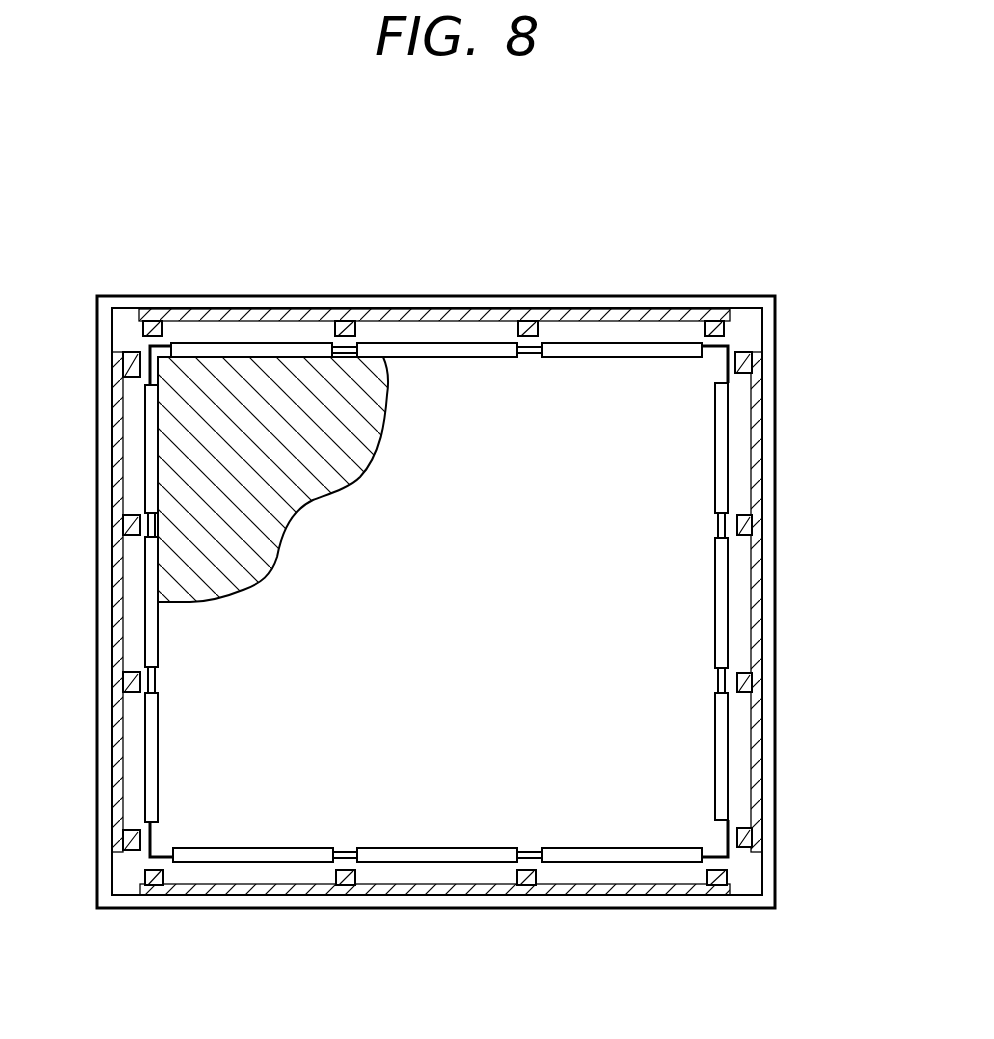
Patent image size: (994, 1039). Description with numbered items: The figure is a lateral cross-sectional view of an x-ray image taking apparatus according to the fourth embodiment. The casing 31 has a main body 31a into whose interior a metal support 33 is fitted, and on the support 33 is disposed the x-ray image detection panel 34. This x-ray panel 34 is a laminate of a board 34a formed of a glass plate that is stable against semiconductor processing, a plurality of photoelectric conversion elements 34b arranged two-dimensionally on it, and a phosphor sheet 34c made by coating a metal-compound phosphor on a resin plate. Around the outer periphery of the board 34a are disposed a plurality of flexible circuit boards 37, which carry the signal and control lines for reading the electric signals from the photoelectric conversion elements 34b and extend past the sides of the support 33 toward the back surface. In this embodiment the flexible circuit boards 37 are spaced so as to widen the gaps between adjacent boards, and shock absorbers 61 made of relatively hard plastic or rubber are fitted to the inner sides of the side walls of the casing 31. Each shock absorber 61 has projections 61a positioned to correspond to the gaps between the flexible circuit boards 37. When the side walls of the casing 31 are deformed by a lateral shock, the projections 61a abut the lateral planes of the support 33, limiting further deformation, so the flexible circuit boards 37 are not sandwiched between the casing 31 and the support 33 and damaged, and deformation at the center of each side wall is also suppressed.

The casing 31 is at (519, 298).
The main body of casing 31a is at (767, 320).
The support 33 is at (148, 350).
The x-ray image detection panel 34 is at (436, 499).
The board 34a is at (167, 342).
The photoelectric conversion elements 34b is at (278, 383).
The phosphor sheet 34c is at (462, 420).
The flexible circuit boards 37 is at (628, 350).
The shock absorbers 61 is at (760, 755).
The projections 61a is at (743, 682).